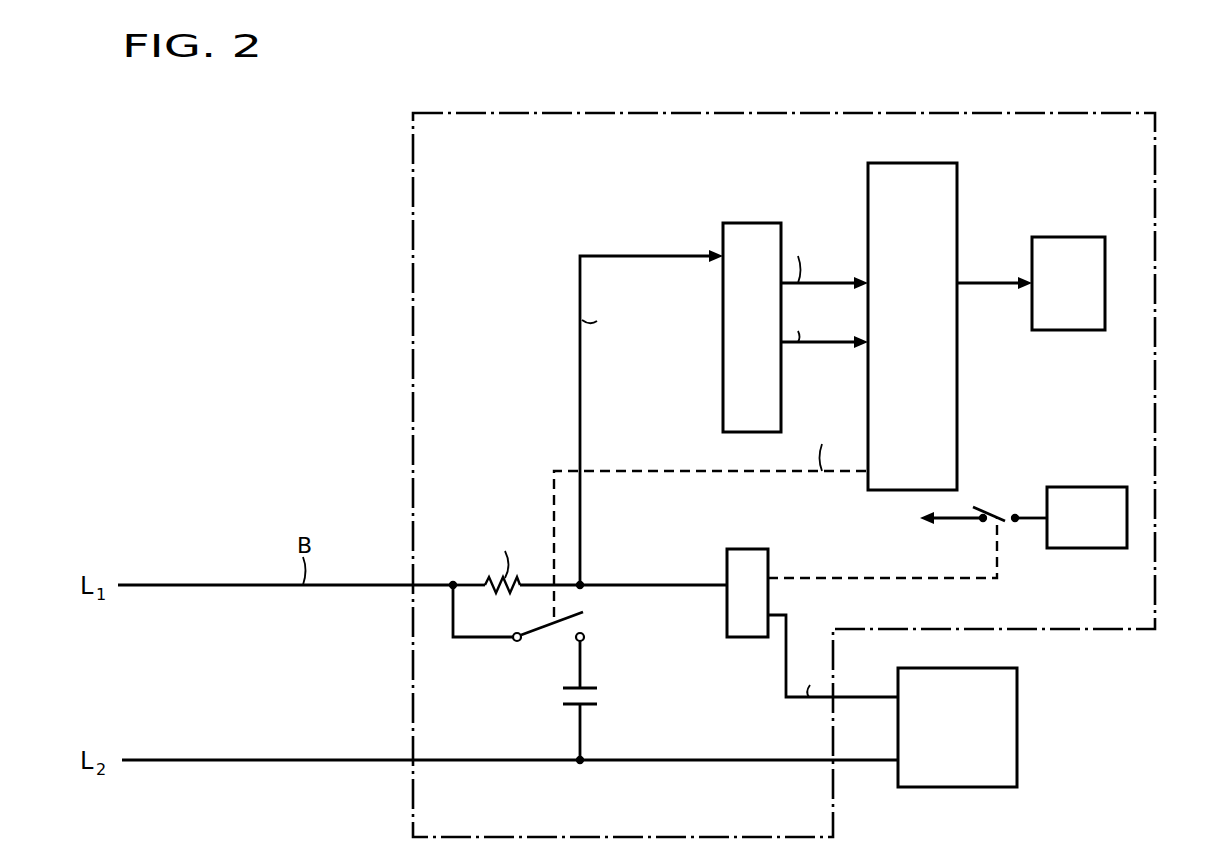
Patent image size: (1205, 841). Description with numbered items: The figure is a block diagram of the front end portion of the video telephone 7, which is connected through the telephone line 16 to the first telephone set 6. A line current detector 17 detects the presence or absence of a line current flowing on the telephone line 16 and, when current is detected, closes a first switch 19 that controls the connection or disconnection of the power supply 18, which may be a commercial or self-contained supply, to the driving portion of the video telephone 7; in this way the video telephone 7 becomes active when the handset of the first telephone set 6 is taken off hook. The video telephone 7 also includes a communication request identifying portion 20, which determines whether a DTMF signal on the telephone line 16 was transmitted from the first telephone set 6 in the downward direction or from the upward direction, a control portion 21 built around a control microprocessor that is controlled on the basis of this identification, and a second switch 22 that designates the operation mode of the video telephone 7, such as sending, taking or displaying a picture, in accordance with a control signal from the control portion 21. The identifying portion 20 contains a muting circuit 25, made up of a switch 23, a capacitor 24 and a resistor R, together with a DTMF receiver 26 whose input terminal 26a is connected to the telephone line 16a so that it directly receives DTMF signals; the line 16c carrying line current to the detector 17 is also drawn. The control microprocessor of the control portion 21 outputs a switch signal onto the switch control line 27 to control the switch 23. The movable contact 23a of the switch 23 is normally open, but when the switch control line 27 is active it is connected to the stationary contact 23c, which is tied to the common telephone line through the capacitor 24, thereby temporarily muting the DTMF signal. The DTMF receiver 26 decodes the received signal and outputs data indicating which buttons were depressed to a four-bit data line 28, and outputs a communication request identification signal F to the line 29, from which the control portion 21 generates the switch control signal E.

The first telephone set 6 is at (1017, 764).
The video telephone 7 is at (1038, 113).
The telephone line 16 is at (780, 682).
The telephone line 16a is at (601, 256).
The line to detector 16c is at (679, 585).
The line current detector 17 is at (770, 553).
The power supply 18 is at (1076, 490).
The first switch 19 is at (973, 507).
The communication request identifying portion 20 is at (540, 389).
The control portion 21 is at (950, 413).
The second switch 22 is at (1068, 244).
The switch 23 is at (561, 642).
The movable contact 23a is at (583, 612).
The stationary contact 23c is at (585, 641).
The capacitor 24 is at (600, 700).
The muting circuit 25 is at (556, 573).
The DTMF receiver 26 is at (714, 318).
The input terminal 26a is at (721, 262).
The switch control line 27 is at (665, 471).
The 4-bit data line 28 is at (841, 283).
The line 29 is at (841, 342).